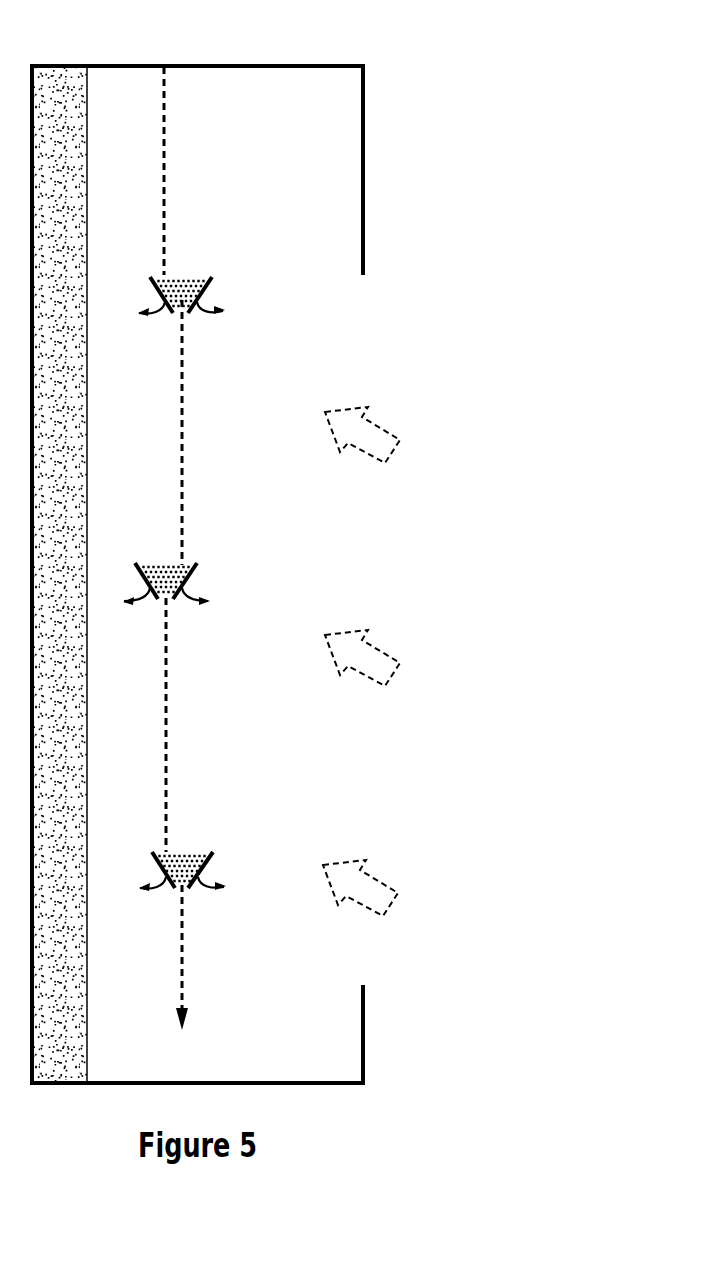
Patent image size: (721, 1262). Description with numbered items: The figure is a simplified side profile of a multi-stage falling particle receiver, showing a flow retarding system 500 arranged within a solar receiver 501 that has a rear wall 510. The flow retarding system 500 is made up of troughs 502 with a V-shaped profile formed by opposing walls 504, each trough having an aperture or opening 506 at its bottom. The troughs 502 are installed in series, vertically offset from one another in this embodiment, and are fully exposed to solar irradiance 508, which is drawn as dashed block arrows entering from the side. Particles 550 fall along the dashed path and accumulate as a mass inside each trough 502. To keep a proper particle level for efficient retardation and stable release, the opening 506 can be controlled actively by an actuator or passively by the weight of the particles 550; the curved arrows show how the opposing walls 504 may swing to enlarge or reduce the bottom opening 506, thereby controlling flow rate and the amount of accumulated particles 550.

The flow retarding system 500 is at (212, 268).
The solar receiver 501 is at (232, 64).
The troughs 502 is at (204, 555).
The opposing walls 504 is at (145, 582).
The opening 506 is at (175, 609).
The solar irradiance 508 is at (387, 414).
The rear wall 510 is at (88, 428).
The particles 550 is at (178, 280).